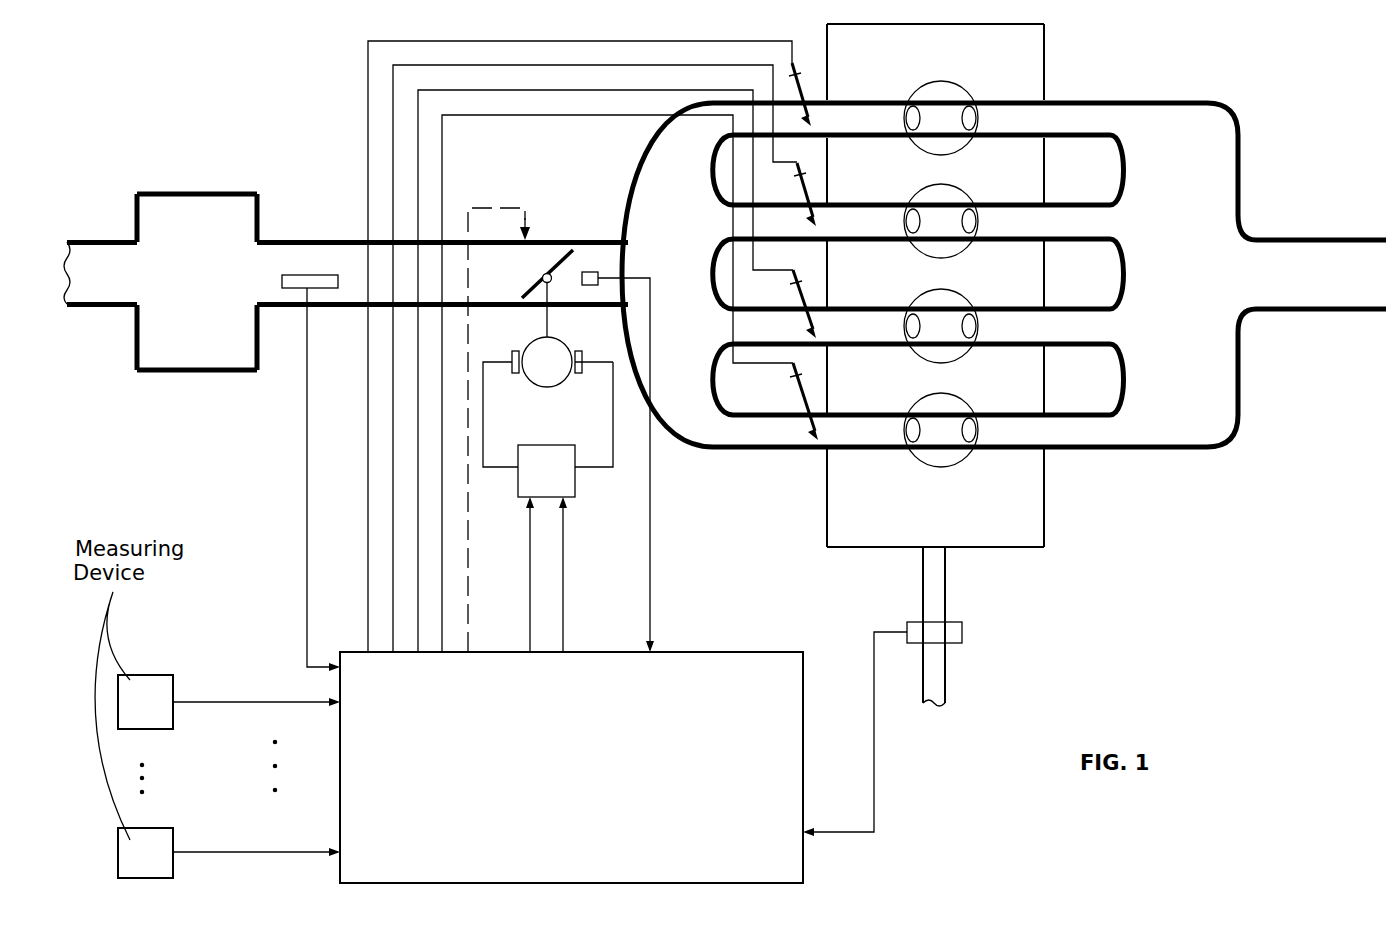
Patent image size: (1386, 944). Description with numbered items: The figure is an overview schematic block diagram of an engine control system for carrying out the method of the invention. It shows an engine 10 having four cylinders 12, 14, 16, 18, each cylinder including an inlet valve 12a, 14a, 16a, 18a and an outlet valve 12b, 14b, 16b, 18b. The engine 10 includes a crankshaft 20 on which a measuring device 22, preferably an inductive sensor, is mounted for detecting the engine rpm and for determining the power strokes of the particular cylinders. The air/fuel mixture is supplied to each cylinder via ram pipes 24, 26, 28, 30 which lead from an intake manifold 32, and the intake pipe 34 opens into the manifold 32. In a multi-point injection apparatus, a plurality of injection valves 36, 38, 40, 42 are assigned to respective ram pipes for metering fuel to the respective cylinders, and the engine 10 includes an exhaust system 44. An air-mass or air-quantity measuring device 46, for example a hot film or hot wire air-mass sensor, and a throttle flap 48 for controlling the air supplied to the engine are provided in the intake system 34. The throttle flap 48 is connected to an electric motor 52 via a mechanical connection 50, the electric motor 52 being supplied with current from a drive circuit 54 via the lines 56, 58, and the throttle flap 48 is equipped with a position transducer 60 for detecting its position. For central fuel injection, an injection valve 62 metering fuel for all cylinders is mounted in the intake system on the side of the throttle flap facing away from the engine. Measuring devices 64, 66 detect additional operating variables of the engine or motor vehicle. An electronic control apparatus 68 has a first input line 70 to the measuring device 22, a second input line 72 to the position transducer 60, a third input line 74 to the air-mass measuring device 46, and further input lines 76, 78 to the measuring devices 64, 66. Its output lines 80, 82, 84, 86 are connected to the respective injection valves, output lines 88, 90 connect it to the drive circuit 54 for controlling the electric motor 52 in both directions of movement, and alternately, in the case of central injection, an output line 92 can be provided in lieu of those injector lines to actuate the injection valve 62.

The engine 10 is at (1038, 42).
The cylinder 12 is at (941, 89).
The inlet valve 12a is at (925, 102).
The outlet valve 12b is at (977, 102).
The cylinder 14 is at (950, 188).
The inlet valve 14a is at (925, 206).
The outlet valve 14b is at (980, 206).
The cylinder 16 is at (946, 293).
The inlet valve 16a is at (918, 312).
The outlet valve 16b is at (976, 316).
The cylinder 18 is at (946, 398).
The inlet valve 18a is at (918, 419).
The outlet valve 18b is at (976, 419).
The crankshaft 20 is at (946, 604).
The measuring device 22 is at (960, 642).
The ram pipe 24 is at (844, 109).
The ram pipe 26 is at (844, 212).
The ram pipe 28 is at (842, 311).
The ram pipe 30 is at (842, 415).
The intake manifold 32 is at (661, 170).
The intake pipe 34 is at (343, 253).
The injection valve 36 is at (806, 88).
The injection valve 38 is at (806, 190).
The injection valve 40 is at (804, 297).
The injection valve 42 is at (805, 407).
The exhaust system 44 is at (1210, 123).
The air-mass measuring device 46 is at (298, 278).
The throttle flap 48 is at (564, 244).
The mechanical connection 50 is at (552, 320).
The electric motor 52 is at (554, 370).
The drive circuit 54 is at (545, 454).
The line 56 is at (484, 420).
The line 58 is at (613, 448).
The position transducer 60 is at (599, 271).
The injection valve 62 is at (535, 262).
The measuring device 64 is at (155, 679).
The measuring device 66 is at (159, 832).
The electronic control apparatus 68 is at (783, 660).
The first input line 70 is at (874, 776).
The second input line 72 is at (652, 546).
The third input line 74 is at (306, 594).
The input line 76 is at (243, 700).
The input line 78 is at (243, 851).
The output line 80 is at (369, 448).
The output line 82 is at (383, 485).
The output line 84 is at (389, 523).
The output line 86 is at (397, 563).
The output line 88 is at (530, 590).
The output line 90 is at (563, 590).
The output line 92 is at (468, 548).